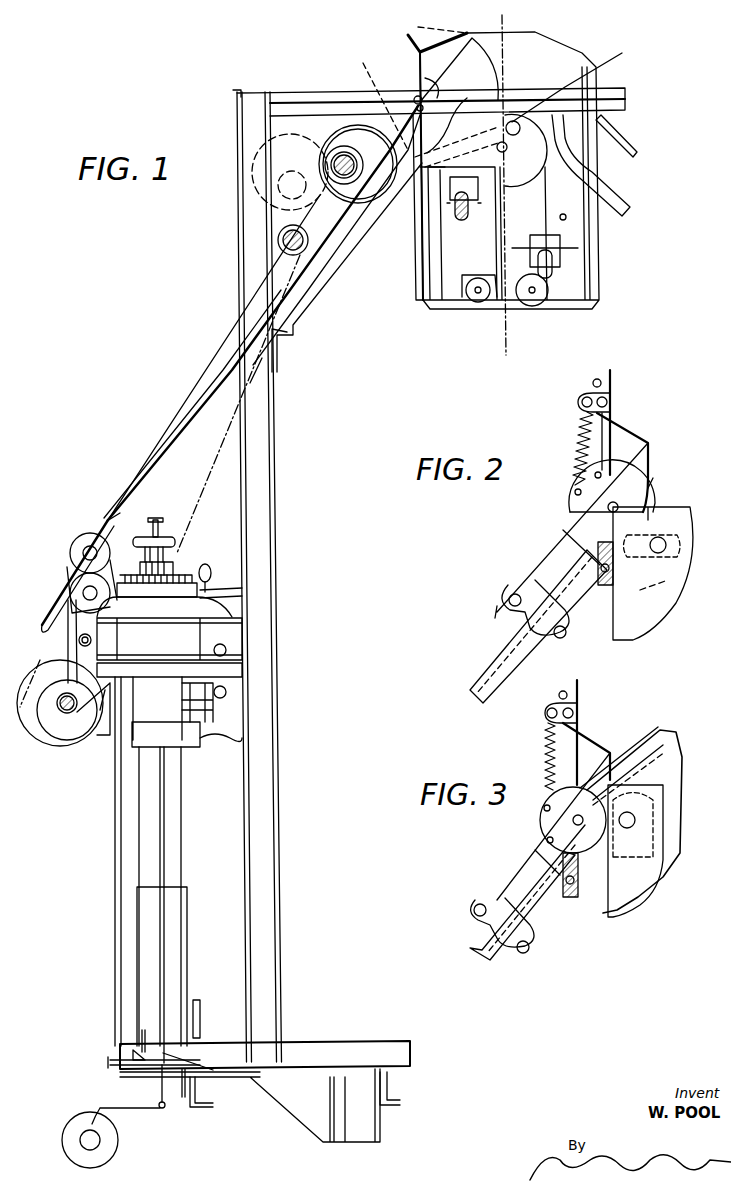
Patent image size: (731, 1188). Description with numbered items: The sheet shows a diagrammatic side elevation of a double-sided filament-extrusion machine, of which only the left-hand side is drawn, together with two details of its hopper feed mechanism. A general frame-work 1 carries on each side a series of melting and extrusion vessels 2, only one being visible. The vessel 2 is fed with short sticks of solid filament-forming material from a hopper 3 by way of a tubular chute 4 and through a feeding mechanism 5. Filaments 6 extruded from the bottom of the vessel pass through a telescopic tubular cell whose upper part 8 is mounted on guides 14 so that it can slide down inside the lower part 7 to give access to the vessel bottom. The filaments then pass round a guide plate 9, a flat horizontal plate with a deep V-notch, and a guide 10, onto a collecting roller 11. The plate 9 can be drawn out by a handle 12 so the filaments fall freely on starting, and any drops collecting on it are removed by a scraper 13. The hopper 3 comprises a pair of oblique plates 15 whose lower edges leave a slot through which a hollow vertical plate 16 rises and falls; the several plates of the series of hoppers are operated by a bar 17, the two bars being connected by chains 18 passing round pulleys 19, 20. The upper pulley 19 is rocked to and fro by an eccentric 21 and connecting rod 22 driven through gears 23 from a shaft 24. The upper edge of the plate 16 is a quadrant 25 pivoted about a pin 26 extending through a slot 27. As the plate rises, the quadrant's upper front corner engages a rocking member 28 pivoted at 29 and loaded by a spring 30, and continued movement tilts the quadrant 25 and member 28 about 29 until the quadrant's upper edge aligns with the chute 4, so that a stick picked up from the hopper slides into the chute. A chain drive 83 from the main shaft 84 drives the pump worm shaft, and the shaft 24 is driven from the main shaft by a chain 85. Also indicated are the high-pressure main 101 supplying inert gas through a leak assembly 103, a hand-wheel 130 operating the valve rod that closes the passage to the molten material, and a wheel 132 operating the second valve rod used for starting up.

In FIG. 1, the general frame-work 1 is at (347, 1050).
In FIG. 1, the melting and extrusion vessel 2 is at (183, 636).
In FIG. 1, the hopper 3 is at (438, 282).
In FIG. 1, the tubular chute 4 is at (238, 357).
In FIG. 2, the tubular chute 4 is at (485, 672).
In FIG. 3, the tubular chute 4 is at (480, 955).
In FIG. 1, the feeding mechanism 5 is at (88, 545).
In FIG. 1, the filaments 6 is at (122, 1106).
In FIG. 1, the lower part of tubular cell 7 is at (180, 905).
In FIG. 1, the upper part of tubular cell 8 is at (172, 827).
In FIG. 1, the guide plate 9 is at (183, 1097).
In FIG. 1, the guide 10 is at (162, 1108).
In FIG. 1, the collecting roller 11 is at (100, 1140).
In FIG. 1, the handle 12 is at (112, 1058).
In FIG. 1, the scraper 13 is at (143, 1033).
In FIG. 1, the guides 14 is at (163, 783).
In FIG. 1, the oblique plates 15 is at (585, 150).
In FIG. 1, the vertical plate 16 is at (432, 190).
In FIG. 2, the vertical plate 16 is at (632, 622).
In FIG. 3, the vertical plate 16 is at (593, 915).
In FIG. 1, the bar 17 is at (462, 222).
In FIG. 1, the chains 18 is at (465, 248).
In FIG. 1, the upper pulley 19 is at (622, 53).
In FIG. 1, the pulley 20 is at (470, 300).
In FIG. 1, the eccentric 21 is at (348, 135).
In FIG. 1, the connecting rod 22 is at (378, 62).
In FIG. 1, the gears 23 is at (320, 130).
In FIG. 1, the shaft 24 is at (303, 245).
In FIG. 1, the quadrant 25 is at (455, 70).
In FIG. 2, the quadrant 25 is at (642, 500).
In FIG. 3, the quadrant 25 is at (652, 752).
In FIG. 1, the pivot pin 26 is at (424, 84).
In FIG. 2, the pivot pin 26 is at (664, 530).
In FIG. 3, the pivot pin 26 is at (628, 830).
In FIG. 2, the slot 27 is at (615, 590).
In FIG. 3, the slot 27 is at (638, 860).
In FIG. 2, the rocking member 28 is at (583, 490).
In FIG. 3, the rocking member 28 is at (548, 825).
In FIG. 2, the pivot 29 is at (600, 520).
In FIG. 3, the pivot 29 is at (575, 830).
In FIG. 2, the spring 30 is at (578, 438).
In FIG. 3, the spring 30 is at (545, 745).
In FIG. 1, the chain drive 83 is at (105, 740).
In FIG. 1, the main shaft 84 is at (70, 735).
In FIG. 1, the chain 85 is at (250, 383).
In FIG. 1, the high-pressure main 101 is at (226, 650).
In FIG. 1, the leak assembly 103 is at (212, 710).
In FIG. 1, the hand-wheel 130 is at (173, 542).
In FIG. 1, the wheel 132 is at (160, 518).